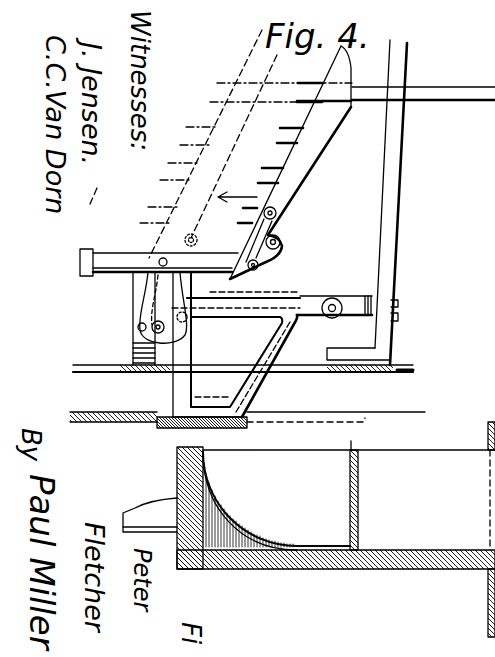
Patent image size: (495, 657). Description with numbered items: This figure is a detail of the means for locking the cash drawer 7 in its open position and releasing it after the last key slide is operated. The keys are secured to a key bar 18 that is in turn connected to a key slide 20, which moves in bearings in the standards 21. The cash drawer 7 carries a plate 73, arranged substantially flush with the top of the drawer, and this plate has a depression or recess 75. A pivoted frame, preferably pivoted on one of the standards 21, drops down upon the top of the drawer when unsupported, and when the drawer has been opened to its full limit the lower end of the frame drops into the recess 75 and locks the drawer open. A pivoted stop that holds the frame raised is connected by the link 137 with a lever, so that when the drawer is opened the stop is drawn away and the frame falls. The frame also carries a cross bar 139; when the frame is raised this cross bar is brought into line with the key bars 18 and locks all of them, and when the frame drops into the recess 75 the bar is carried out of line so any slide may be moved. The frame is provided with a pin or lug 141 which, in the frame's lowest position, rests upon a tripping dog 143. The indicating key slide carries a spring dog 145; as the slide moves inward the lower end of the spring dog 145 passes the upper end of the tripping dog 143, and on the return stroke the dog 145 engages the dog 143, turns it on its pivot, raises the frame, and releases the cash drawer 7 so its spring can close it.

The cash drawer 7 is at (434, 569).
The key bar 18 is at (307, 157).
The key slide 20 is at (433, 91).
The standard 21 is at (392, 218).
The plate 73 is at (133, 421).
The depression or recess 75 is at (109, 254).
The link 137 is at (293, 339).
The cross bar 139 is at (236, 286).
The pin or lug 141 is at (188, 320).
The tripping dog 143 is at (157, 305).
The spring dog 145 is at (266, 253).